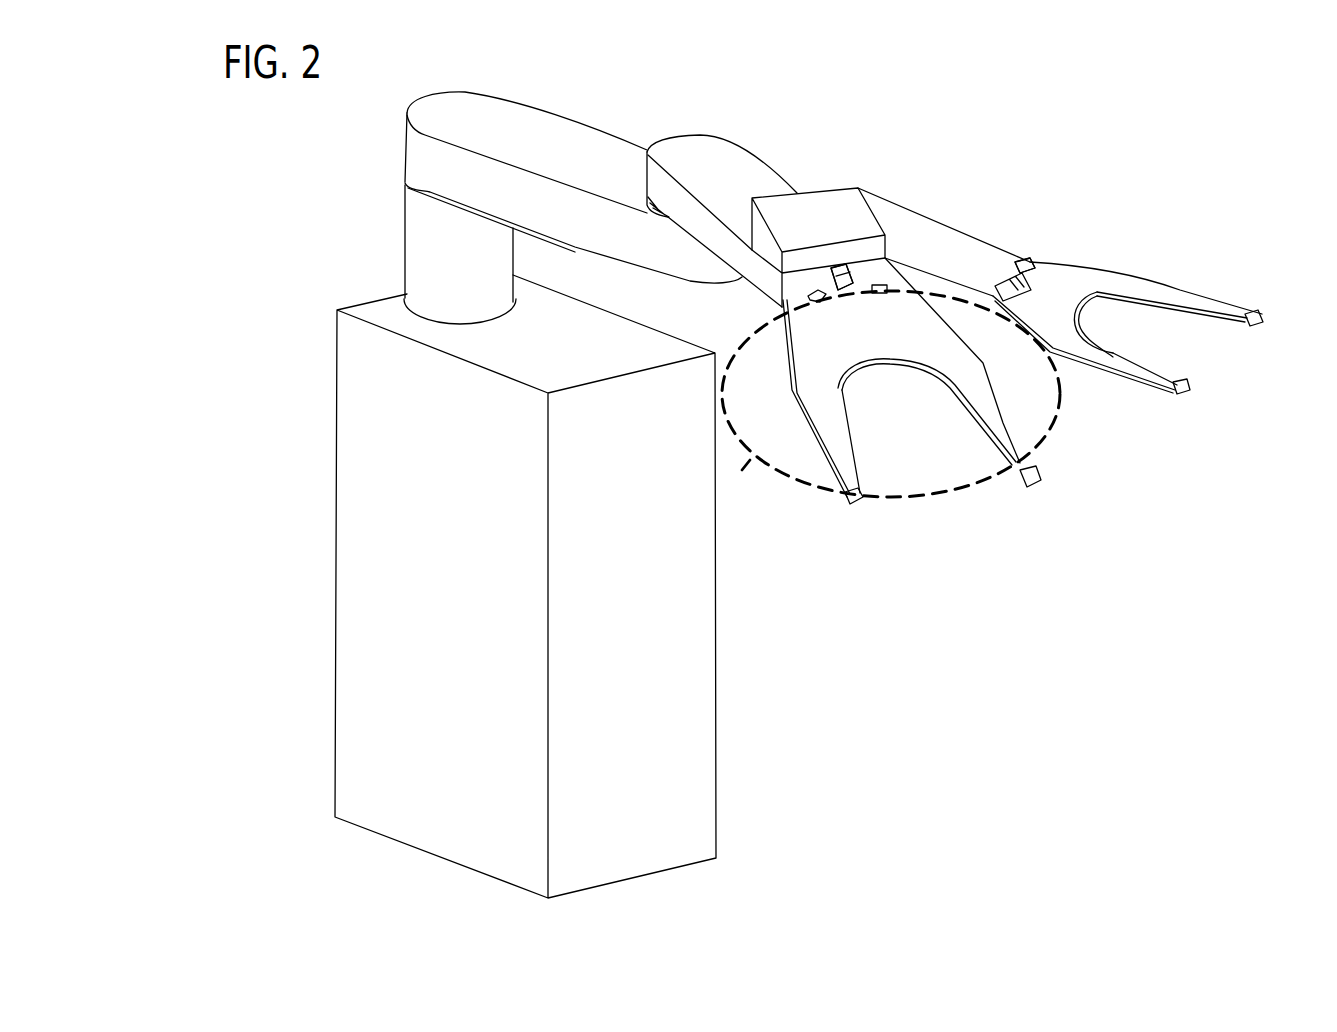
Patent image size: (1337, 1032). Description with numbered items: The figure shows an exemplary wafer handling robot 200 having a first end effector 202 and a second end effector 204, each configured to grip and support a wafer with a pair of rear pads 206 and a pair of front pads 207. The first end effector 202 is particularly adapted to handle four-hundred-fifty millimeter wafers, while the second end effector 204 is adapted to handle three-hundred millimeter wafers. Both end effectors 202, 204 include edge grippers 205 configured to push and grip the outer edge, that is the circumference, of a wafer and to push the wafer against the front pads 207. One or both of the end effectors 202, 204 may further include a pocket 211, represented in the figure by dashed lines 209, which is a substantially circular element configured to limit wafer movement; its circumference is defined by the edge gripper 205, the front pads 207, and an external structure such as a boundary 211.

The wafer handling robot 200 is at (682, 471).
The first end effector 202 is at (915, 377).
The second end effector 204 is at (1127, 314).
The edge grippers 205 is at (933, 224).
The rear pads 206 is at (938, 297).
The front pads 207 is at (1074, 421).
The sensing region 209 is at (885, 394).
The pocket 211 is at (741, 481).